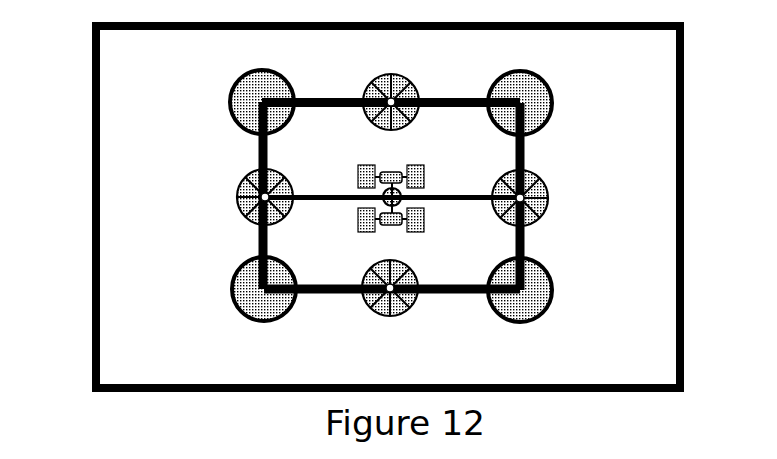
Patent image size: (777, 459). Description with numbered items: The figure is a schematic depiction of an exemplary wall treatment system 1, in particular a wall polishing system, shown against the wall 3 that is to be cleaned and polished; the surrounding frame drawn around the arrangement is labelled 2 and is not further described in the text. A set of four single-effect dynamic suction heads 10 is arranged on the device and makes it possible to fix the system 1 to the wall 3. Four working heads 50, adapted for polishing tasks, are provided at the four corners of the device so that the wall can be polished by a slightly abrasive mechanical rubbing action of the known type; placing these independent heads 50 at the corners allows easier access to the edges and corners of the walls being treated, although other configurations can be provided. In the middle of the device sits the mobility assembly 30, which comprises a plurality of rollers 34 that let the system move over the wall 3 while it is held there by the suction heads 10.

The system 1 is at (200, 153).
The housing / enclosure frame 2 is at (88, 177).
The wall 3 is at (658, 216).
The single-effect dynamic suction head 10 is at (410, 82).
The mobility assembly 30 is at (396, 225).
The roller 34 is at (358, 176).
The working head 50 is at (527, 88).